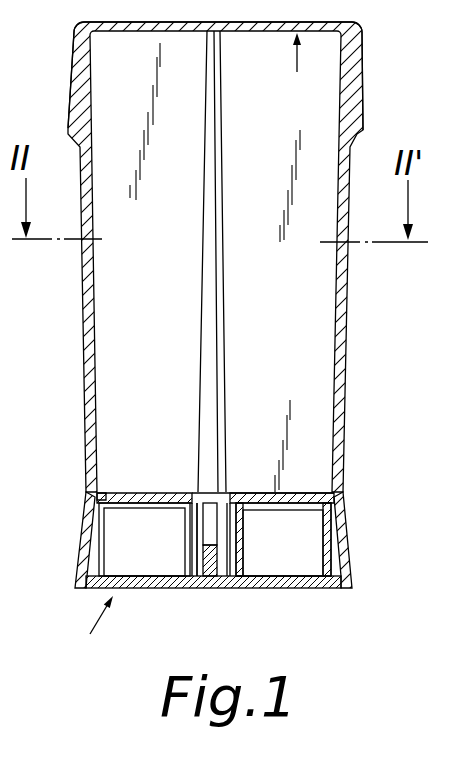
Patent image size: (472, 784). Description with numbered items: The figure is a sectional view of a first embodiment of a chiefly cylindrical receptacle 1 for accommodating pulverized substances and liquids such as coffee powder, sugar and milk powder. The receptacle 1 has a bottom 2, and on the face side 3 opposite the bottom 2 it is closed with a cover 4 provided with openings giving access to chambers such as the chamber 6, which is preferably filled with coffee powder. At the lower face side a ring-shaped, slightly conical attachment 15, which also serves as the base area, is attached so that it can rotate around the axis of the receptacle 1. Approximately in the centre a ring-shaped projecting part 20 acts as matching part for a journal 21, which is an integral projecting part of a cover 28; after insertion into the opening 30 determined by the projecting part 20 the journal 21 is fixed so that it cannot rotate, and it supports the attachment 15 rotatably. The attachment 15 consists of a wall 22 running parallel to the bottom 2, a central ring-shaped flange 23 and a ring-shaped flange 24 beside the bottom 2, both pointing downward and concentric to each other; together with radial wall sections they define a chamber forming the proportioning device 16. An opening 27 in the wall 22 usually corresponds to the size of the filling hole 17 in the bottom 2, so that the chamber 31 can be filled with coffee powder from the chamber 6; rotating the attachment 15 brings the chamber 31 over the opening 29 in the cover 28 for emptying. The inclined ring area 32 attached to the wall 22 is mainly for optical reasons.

The receptacle 1 is at (350, 300).
The bottom 2 is at (288, 492).
The face side 3 is at (304, 64).
The cover 4 is at (366, 58).
The chamber 6 is at (157, 308).
The attachment 15 is at (358, 530).
The proportioning device 16 is at (94, 628).
The filling hole 17 is at (120, 497).
The projecting part 20 is at (221, 560).
The journal 21 is at (210, 570).
The wall 22 is at (318, 493).
The ring-shaped flange 23 is at (235, 540).
The ring-shaped flange 24 is at (333, 548).
The opening 27 is at (162, 505).
The cover 28 is at (100, 590).
The opening 29 is at (283, 560).
The opening 30 is at (207, 523).
The chamber 31 is at (153, 554).
The inclined ring area 32 is at (83, 536).